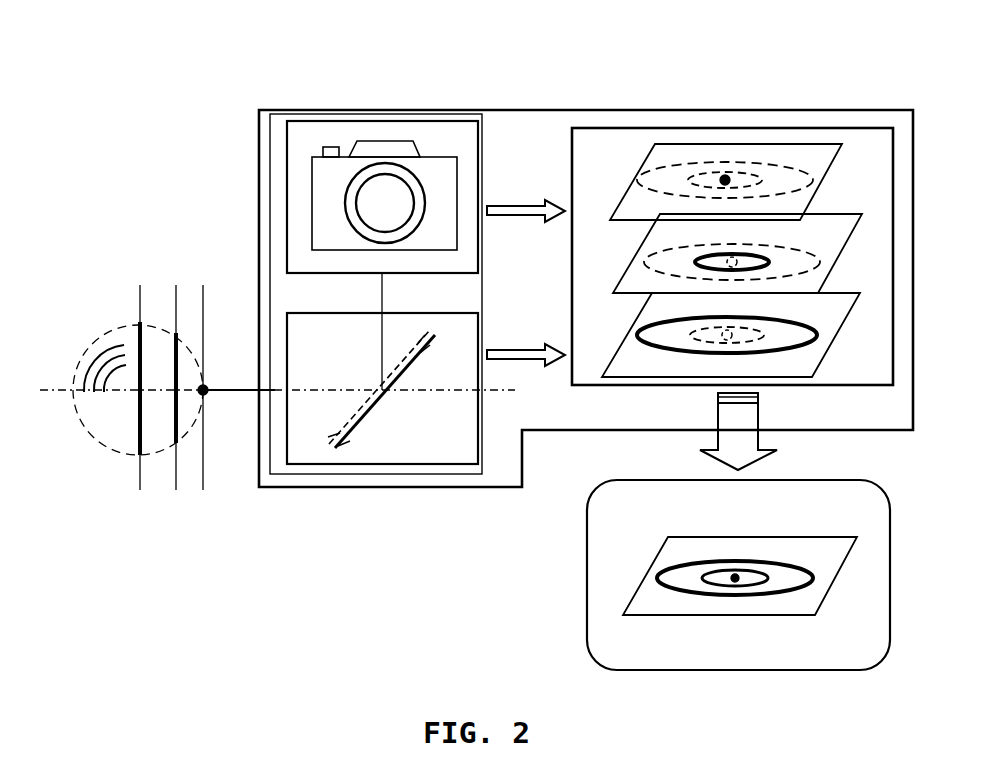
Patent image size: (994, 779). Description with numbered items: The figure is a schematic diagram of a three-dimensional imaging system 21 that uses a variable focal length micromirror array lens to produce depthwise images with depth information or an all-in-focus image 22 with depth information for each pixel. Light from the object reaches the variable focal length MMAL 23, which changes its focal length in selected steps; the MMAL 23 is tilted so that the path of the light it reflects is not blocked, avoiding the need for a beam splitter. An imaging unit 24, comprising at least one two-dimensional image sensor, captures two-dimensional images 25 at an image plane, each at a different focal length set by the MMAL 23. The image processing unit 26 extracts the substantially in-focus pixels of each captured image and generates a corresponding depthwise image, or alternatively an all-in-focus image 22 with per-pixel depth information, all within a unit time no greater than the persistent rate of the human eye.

The three-dimensional imaging system 21 is at (270, 492).
The all-in-focus image 22 is at (632, 592).
The variable focal length MMAL 23 is at (348, 440).
The imaging unit 24 is at (282, 160).
The images 25 is at (622, 330).
The image processing unit 26 is at (738, 128).